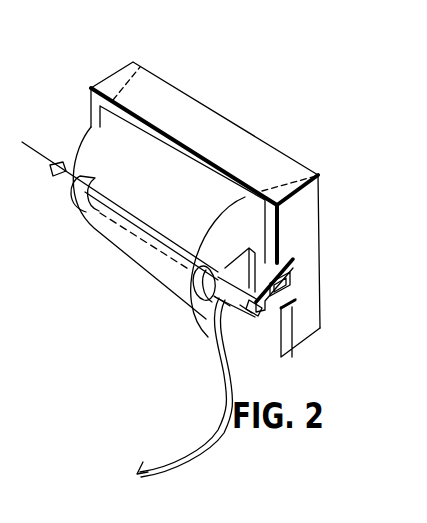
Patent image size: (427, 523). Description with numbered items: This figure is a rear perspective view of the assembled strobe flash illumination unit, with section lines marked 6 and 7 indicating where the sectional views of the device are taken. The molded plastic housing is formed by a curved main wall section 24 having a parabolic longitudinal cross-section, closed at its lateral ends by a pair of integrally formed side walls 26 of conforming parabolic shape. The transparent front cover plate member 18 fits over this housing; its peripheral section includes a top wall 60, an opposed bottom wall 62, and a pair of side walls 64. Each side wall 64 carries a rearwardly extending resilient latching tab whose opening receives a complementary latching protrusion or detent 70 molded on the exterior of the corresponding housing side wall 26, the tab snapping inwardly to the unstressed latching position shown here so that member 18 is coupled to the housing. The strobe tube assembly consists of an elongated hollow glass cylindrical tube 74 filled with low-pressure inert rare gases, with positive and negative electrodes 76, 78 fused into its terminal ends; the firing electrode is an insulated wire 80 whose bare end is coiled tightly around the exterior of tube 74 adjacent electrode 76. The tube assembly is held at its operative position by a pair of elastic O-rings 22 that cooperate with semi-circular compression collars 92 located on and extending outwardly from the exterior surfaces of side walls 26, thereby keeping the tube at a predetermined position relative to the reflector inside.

The front cover plate member 18 is at (133, 50).
The elastic O-rings 22 is at (210, 303).
The curved main wall section 24 is at (107, 133).
The side walls 26 is at (212, 242).
The top wall 60 is at (272, 158).
The bottom wall 62 is at (303, 343).
The side walls 64 is at (314, 192).
The latching protrusion or detent 70 is at (281, 289).
The cylindrical tube 74 is at (229, 301).
The positive electrode 76 is at (250, 302).
The negative electrode 78 is at (60, 166).
The insulated wire 80 is at (211, 364).
The semi-circular compression collars 92 is at (248, 263).
The section line 6- 6 is at (30, 142).
The section line 7- 7 is at (290, 118).